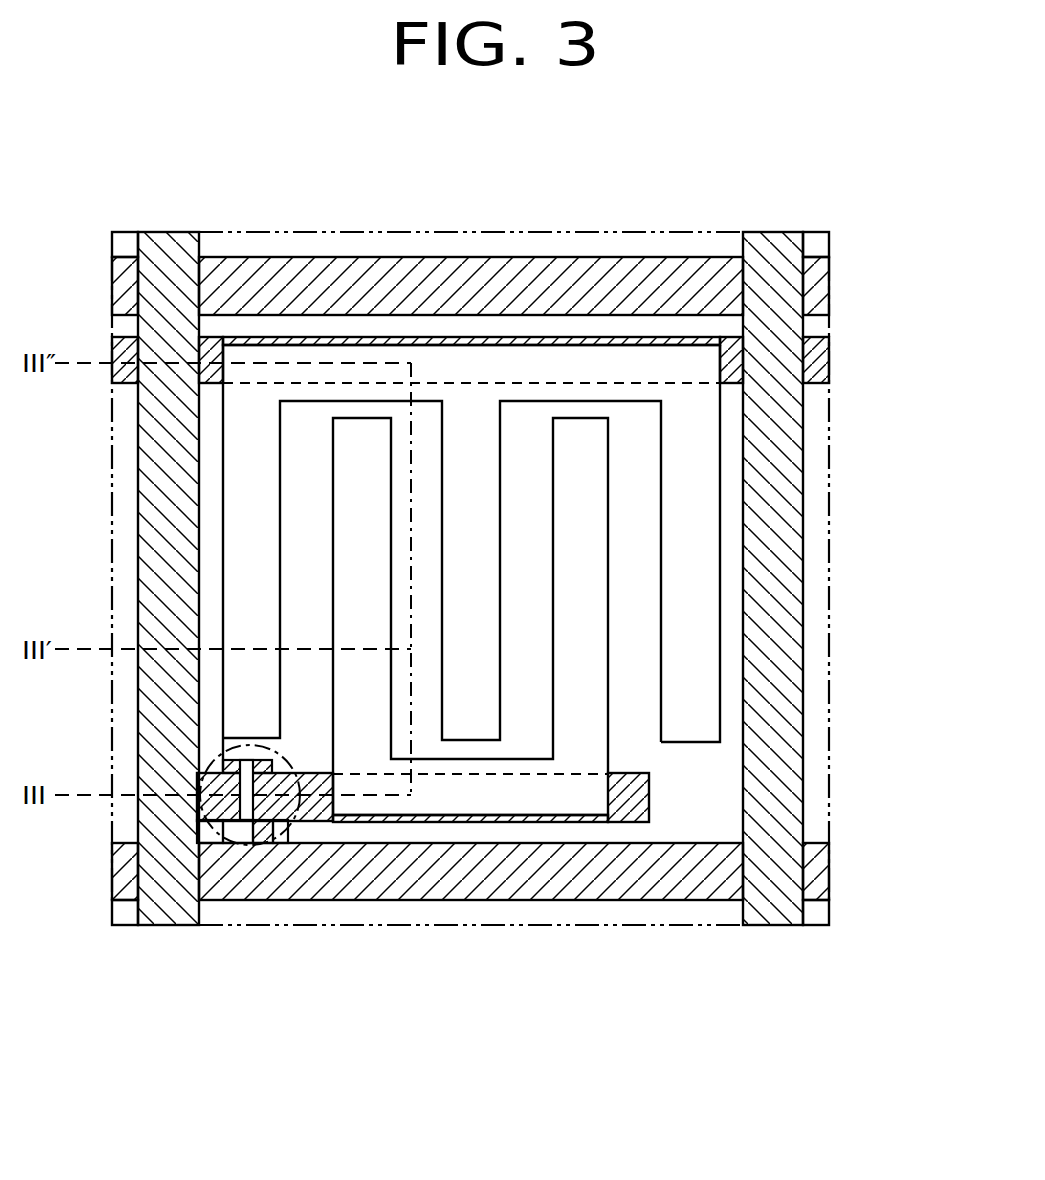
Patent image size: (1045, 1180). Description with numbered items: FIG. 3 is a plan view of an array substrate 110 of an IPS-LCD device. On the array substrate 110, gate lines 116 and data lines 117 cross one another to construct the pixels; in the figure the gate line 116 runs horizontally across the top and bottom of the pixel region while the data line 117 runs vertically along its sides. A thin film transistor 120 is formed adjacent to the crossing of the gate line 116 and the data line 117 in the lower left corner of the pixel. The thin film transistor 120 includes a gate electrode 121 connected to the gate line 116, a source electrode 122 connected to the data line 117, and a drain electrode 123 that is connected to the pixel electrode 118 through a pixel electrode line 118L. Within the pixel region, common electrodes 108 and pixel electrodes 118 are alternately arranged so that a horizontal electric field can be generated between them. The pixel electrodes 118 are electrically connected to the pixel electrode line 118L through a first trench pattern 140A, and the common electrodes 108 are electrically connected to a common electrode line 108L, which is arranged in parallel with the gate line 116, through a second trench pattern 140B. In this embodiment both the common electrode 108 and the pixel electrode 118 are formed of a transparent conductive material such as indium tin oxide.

The array substrate 110 is at (838, 242).
The data line 117 is at (147, 465).
The gate line 116 is at (818, 877).
The common electrode line 108L is at (818, 358).
The common electrode 108 is at (708, 530).
The first trench pattern 140A is at (608, 449).
The second trench pattern 140B is at (720, 595).
The pixel electrode 118 is at (595, 657).
The pixel electrode line 118L is at (626, 822).
The thin film transistor 120 is at (195, 757).
The gate electrode 121 is at (248, 835).
The source electrode 122 is at (208, 832).
The drain electrode 123 is at (273, 822).